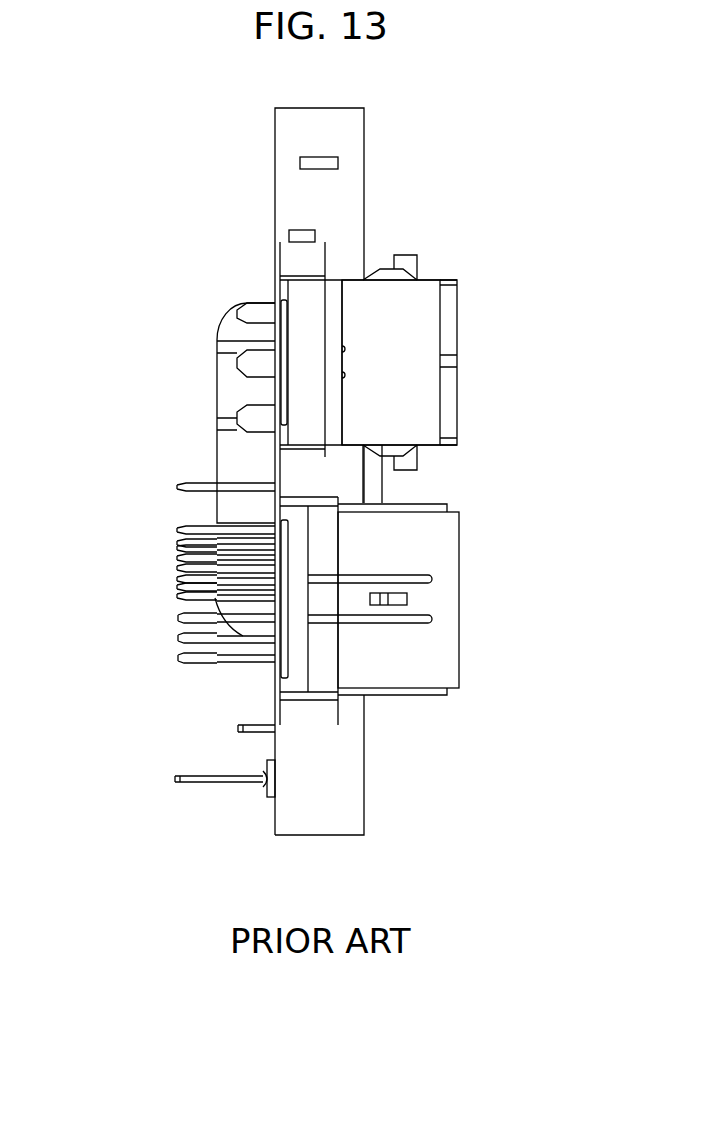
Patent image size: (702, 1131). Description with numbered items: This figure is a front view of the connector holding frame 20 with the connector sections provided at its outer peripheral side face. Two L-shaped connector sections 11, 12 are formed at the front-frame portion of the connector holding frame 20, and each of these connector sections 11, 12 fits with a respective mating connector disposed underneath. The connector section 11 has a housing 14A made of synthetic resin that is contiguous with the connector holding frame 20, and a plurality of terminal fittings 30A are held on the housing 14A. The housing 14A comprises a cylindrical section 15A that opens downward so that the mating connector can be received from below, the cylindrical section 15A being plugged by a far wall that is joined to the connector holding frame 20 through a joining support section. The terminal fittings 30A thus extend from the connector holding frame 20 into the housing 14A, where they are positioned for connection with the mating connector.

The connector section 11 is at (362, 653).
The connector section 12 is at (440, 188).
The housing 14A is at (442, 653).
The cylindrical section 15A is at (460, 538).
The connector holding frame 20 is at (280, 193).
The terminal fittings 30A is at (177, 582).